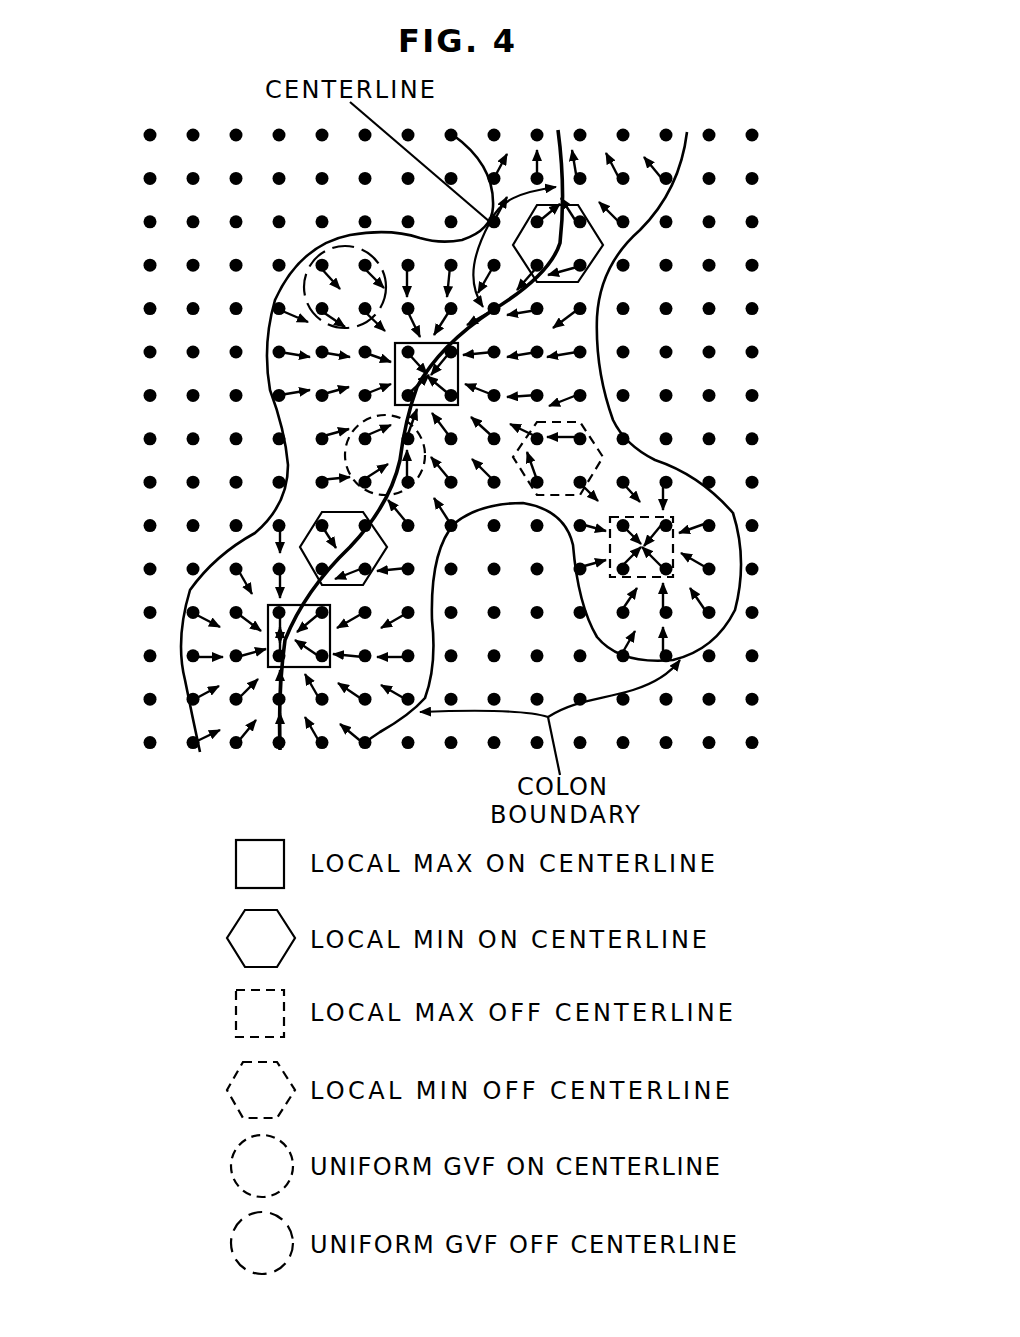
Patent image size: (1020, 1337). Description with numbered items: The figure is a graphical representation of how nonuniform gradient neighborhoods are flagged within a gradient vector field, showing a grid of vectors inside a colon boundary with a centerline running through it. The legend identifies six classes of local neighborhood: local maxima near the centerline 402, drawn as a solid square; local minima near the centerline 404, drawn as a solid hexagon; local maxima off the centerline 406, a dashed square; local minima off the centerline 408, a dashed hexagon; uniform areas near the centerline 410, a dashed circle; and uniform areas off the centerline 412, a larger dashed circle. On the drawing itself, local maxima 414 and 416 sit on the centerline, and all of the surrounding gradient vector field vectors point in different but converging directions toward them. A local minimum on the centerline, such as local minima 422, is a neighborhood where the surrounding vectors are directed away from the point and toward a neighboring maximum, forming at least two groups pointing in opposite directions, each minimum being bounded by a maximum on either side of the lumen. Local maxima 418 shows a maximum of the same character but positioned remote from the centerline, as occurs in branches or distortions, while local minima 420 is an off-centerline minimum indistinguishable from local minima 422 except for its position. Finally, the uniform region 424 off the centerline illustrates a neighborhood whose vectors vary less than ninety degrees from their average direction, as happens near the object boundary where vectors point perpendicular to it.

The local maxima near the centerline 402 is at (237, 862).
The local minima near the centerline 404 is at (232, 928).
The local maxima off the centerline 406 is at (237, 1012).
The local minima off the centerline 408 is at (232, 1077).
The uniform areas near the centerline 410 is at (232, 1152).
The uniform areas off the centerline 412 is at (235, 1230).
The local maxima 414 is at (268, 638).
The local maxima 416 is at (395, 377).
The local maxima 418 is at (673, 517).
The local minima 420 is at (583, 423).
The local minima 422 is at (593, 228).
The uniform gradient vector field region off the centerline 424 is at (310, 257).